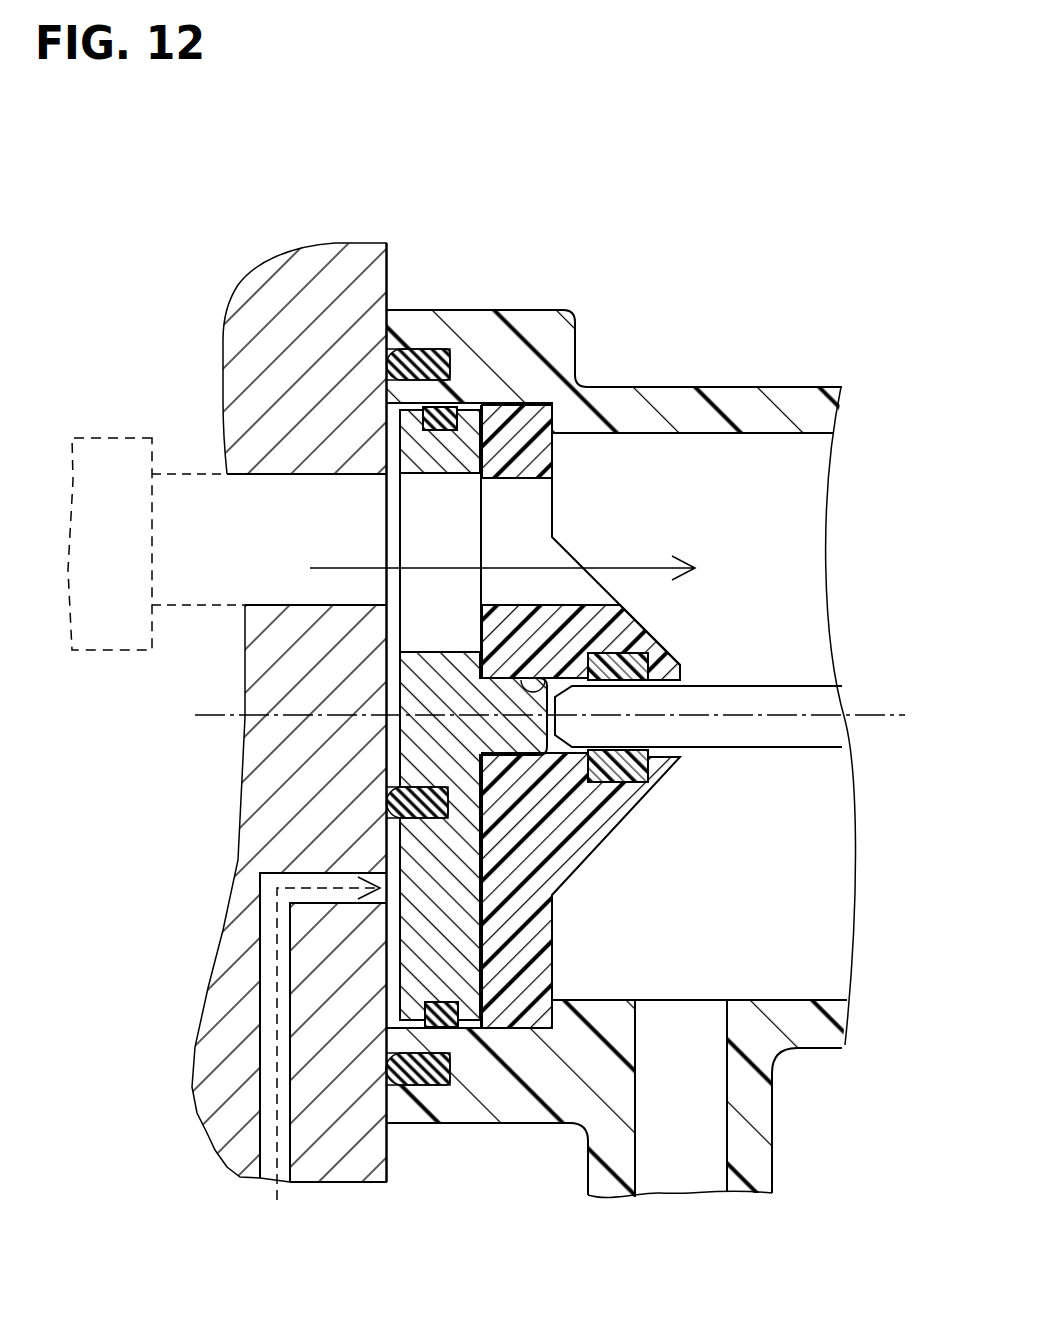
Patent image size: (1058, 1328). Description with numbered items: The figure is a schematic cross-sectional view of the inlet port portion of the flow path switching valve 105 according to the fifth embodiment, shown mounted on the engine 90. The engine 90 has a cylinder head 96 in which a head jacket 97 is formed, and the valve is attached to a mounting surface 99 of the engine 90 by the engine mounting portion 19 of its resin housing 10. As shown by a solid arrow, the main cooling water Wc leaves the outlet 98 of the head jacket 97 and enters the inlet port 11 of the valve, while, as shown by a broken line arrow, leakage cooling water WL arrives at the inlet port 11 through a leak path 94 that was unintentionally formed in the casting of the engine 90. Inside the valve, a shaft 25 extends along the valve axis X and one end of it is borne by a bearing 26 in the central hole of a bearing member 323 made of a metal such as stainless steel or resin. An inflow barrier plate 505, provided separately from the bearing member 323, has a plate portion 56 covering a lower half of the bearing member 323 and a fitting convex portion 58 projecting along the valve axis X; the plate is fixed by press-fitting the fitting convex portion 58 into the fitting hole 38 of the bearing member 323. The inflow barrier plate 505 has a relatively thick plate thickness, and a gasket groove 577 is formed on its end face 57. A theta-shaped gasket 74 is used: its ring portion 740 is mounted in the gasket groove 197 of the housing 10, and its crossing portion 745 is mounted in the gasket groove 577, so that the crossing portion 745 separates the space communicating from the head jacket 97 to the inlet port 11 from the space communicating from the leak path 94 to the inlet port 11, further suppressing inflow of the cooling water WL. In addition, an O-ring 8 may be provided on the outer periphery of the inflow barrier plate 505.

The O-ring 8 is at (582, 1120).
The housing 10 is at (618, 618).
The inlet port 11 is at (440, 408).
The engine mounting portion 19 is at (387, 328).
The shaft 25 is at (765, 710).
The bearing 26 is at (612, 668).
The fitting hole 38 is at (555, 650).
The plate portion 56 is at (437, 907).
The end face 57 is at (471, 889).
The fitting convex portion 58 is at (560, 770).
The gasket 74 is at (433, 1108).
The engine 90 is at (268, 712).
The leak path 94 is at (263, 1118).
The cylinder head 96 is at (247, 352).
The head jacket 97 is at (106, 470).
The outlet 98 is at (258, 525).
The mounting surface 99 is at (387, 277).
The flow path switching valve 105 is at (585, 718).
The gasket groove 197 is at (463, 367).
The bearing member 323 is at (680, 822).
The inflow barrier plate 505 is at (399, 628).
The gasket groove 577 is at (520, 850).
The ring portion 740 is at (392, 1149).
The crossing portion 745 is at (400, 790).
The cooling water Wc is at (347, 567).
The cooling water WL is at (273, 955).
The valve axis X is at (860, 713).